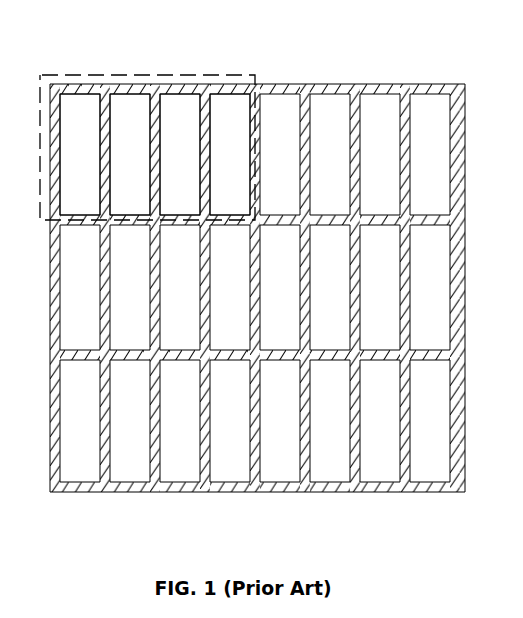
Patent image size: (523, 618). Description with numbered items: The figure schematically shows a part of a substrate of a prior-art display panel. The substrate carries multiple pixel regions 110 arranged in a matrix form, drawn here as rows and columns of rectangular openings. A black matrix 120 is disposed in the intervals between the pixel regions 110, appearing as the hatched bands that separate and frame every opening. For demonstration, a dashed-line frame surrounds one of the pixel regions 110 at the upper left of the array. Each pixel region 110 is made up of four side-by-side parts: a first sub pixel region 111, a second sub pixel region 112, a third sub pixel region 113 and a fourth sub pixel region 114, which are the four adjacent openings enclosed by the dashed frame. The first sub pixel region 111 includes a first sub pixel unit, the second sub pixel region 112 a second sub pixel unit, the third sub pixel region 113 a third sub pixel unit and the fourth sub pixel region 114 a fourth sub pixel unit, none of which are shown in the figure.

The pixel region 110 is at (63, 74).
The first sub pixel region 111 is at (66, 105).
The second sub pixel region 112 is at (122, 107).
The third sub pixel region 113 is at (175, 107).
The fourth sub pixel region 114 is at (228, 107).
The black matrix 120 is at (355, 90).